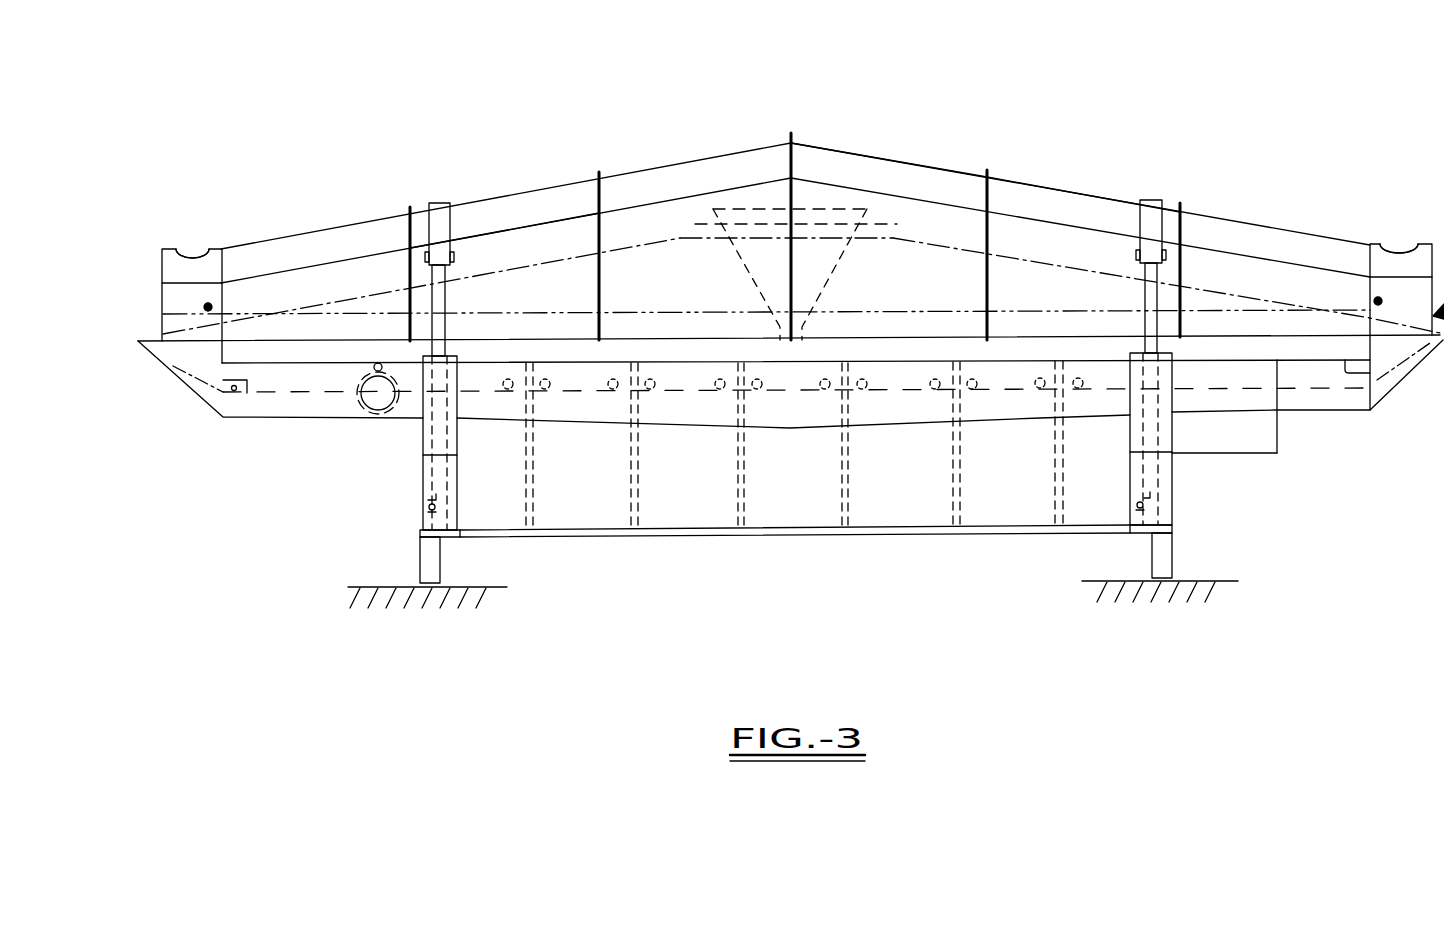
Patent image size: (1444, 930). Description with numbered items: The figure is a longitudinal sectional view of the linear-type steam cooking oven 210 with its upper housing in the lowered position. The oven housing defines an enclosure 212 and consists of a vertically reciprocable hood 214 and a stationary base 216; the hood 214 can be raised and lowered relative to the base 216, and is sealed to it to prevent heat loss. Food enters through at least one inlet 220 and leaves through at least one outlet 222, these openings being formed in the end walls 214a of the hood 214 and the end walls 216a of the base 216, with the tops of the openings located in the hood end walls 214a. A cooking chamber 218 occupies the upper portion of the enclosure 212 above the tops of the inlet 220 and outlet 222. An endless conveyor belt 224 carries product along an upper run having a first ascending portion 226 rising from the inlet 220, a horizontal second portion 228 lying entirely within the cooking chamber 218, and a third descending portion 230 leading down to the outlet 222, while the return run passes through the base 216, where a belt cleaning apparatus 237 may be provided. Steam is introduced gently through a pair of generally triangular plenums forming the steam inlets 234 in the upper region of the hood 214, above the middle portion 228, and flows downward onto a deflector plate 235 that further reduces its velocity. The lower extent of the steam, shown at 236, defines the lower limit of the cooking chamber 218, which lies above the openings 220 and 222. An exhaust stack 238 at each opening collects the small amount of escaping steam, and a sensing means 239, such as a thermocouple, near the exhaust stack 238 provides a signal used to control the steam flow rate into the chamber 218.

The cooking oven 210 is at (716, 128).
The enclosure 212 is at (664, 165).
The hood 214 is at (1040, 180).
The end wall of hood 214a is at (161, 257).
The base 216 is at (320, 420).
The end wall of base 216a is at (199, 398).
The cooking chamber 218 is at (940, 215).
The inlet 220 is at (155, 322).
The outlet 222 is at (1443, 215).
The conveyor belt 224 is at (528, 258).
The first portion of upper run 226 is at (373, 293).
The second portion of upper run 228 is at (680, 238).
The third portion of upper run 230 is at (1090, 270).
The steam inlets 234 is at (742, 262).
The deflector plate 235 is at (885, 226).
The lower extent of steam 236 is at (880, 340).
The belt cleaning apparatus 237 is at (368, 412).
The exhaust stack 238 is at (189, 255).
The sensing means 239 is at (210, 307).